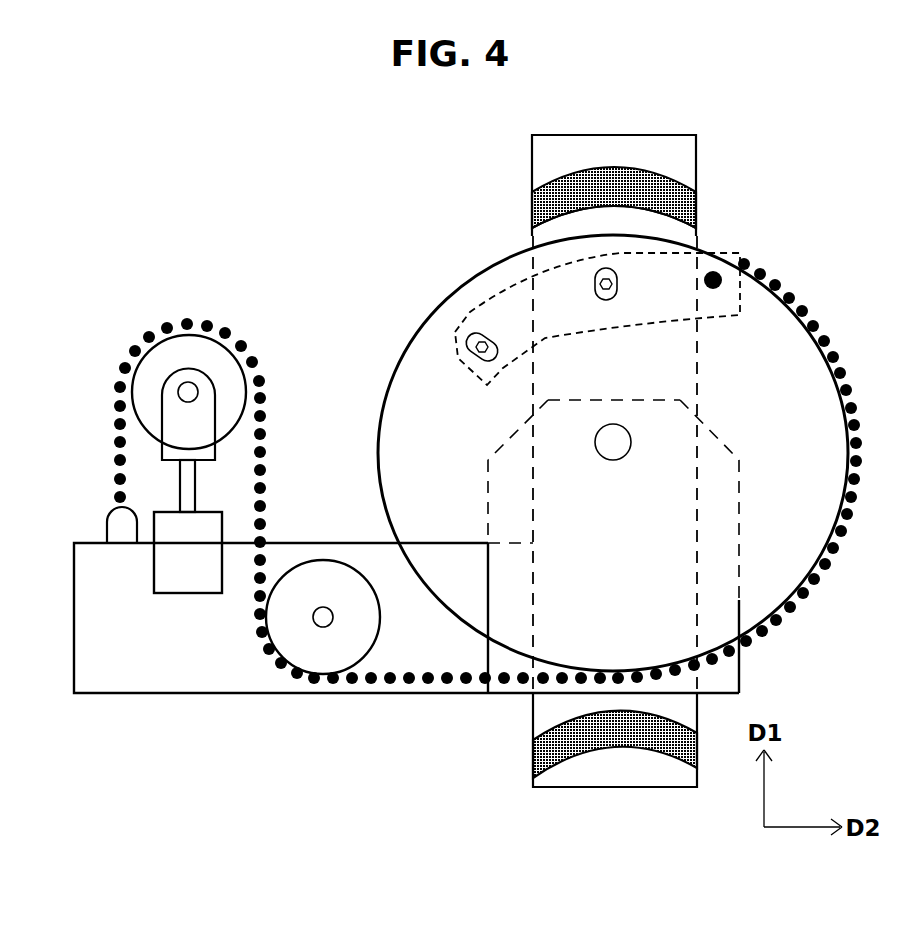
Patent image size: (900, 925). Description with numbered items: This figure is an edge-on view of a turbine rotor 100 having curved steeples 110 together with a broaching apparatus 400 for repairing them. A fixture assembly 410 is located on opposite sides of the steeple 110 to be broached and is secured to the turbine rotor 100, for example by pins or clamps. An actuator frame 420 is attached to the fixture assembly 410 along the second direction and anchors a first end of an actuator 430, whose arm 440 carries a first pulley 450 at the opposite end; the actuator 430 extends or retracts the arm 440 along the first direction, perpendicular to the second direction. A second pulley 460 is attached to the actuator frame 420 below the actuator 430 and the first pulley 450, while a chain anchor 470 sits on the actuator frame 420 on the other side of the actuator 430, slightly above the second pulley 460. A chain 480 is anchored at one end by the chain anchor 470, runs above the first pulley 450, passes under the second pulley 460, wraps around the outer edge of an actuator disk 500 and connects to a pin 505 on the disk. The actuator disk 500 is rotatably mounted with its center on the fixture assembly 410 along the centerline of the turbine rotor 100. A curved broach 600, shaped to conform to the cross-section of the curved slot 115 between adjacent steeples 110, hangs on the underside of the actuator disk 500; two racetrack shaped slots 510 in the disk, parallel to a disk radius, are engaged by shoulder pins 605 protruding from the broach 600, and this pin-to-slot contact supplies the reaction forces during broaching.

The turbine rotor 100 is at (750, 197).
The steeple 110 is at (532, 163).
The curved slot 115 is at (532, 211).
The broaching apparatus 400 is at (440, 522).
The fixture assembly 410 is at (739, 673).
The actuator frame 420 is at (345, 700).
The actuator 430 is at (188, 585).
The arm 440 is at (186, 488).
The first pulley 450 is at (150, 348).
The second pulley 460 is at (327, 578).
The chain anchor 470 is at (106, 520).
The chain 480 is at (200, 320).
The actuator disk 500 is at (400, 437).
The pin 505 is at (718, 271).
The racetrack shaped slot 510 is at (475, 338).
The curved broach 600 is at (487, 320).
The shoulder pin 605 is at (463, 347).